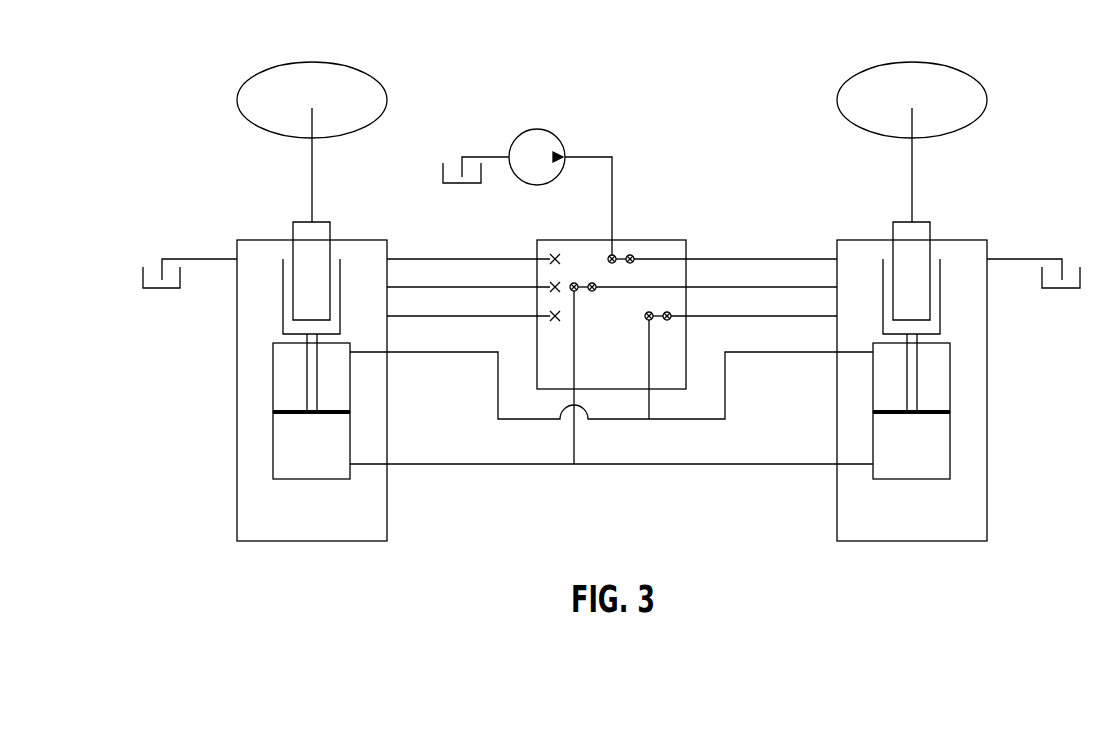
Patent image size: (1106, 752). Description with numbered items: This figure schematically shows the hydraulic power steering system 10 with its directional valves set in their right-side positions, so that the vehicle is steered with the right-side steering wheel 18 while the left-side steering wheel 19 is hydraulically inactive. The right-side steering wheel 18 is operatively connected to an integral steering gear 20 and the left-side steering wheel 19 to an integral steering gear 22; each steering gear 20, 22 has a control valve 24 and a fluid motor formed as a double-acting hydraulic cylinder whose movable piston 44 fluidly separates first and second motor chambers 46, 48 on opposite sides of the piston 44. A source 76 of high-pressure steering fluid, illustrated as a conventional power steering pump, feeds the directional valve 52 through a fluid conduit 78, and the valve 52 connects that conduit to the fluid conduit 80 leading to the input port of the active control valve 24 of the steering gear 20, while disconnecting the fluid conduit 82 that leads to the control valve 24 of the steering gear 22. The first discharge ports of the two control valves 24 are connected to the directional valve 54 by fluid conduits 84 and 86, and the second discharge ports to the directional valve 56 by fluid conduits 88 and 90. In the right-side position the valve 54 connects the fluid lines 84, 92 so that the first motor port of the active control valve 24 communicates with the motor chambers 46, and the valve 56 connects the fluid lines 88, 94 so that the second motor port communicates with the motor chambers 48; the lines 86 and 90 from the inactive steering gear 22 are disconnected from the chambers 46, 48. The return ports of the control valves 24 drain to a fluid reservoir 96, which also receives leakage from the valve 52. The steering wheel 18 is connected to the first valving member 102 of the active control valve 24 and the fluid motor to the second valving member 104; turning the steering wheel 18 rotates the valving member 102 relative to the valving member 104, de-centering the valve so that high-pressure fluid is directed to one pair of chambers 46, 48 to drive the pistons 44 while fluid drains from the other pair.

The hydraulic power steering system 10 is at (740, 143).
The right-side steering wheel 18 is at (945, 66).
The left-side steering wheel 19 is at (363, 71).
The integral steering gear 20 is at (988, 520).
The integral steering gear 22 is at (389, 525).
The control valve 24 is at (955, 291).
The piston 44 is at (942, 414).
The first motor chamber 46 is at (322, 455).
The second motor chamber 48 is at (344, 390).
The directional valve 52 is at (614, 255).
The directional valve 54 is at (583, 292).
The directional valve 56 is at (659, 320).
The source of high-pressure steering fluid 76 is at (548, 131).
The fluid conduit 78 is at (613, 177).
The fluid conduit 80 is at (713, 259).
The fluid conduit 82 is at (418, 259).
The fluid conduit 84 is at (762, 287).
The fluid conduit 86 is at (466, 287).
The fluid conduit 88 is at (806, 316).
The fluid conduit 90 is at (505, 316).
The fluid line 92 is at (574, 359).
The fluid line 94 is at (652, 356).
The fluid reservoir 96 is at (442, 170).
The first valving member 102 is at (930, 228).
The second valving member 104 is at (941, 308).